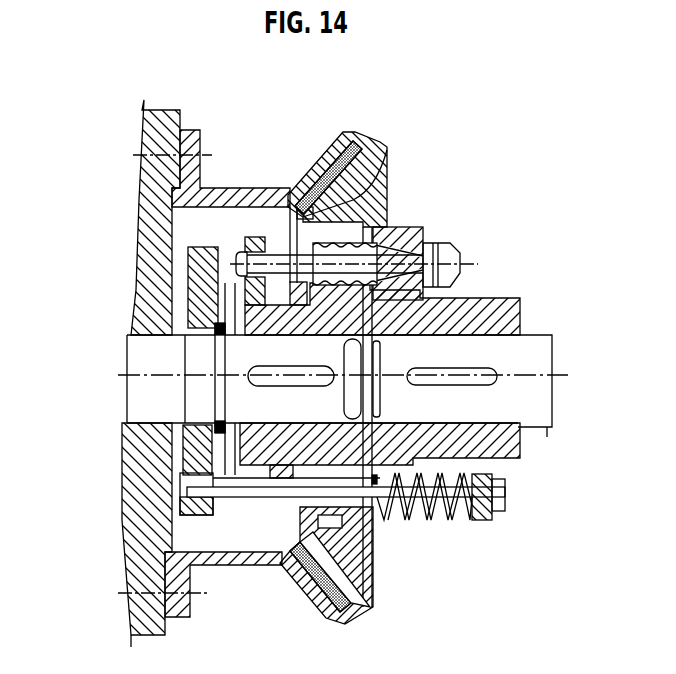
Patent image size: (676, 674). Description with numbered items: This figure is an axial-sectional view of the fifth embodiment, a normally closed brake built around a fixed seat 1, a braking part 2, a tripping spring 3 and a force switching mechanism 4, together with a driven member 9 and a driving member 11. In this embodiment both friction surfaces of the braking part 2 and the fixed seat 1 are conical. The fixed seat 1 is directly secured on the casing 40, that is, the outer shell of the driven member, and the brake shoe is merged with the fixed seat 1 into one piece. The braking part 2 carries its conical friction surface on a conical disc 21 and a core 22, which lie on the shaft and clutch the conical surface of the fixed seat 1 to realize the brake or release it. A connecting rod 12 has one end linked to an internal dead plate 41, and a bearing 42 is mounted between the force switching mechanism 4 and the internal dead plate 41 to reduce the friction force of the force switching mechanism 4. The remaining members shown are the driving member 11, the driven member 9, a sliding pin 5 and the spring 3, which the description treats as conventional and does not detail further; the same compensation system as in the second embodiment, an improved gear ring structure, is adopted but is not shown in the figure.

The fixed seat 1 is at (252, 190).
The braking part 2 is at (352, 587).
The tripping spring 3 is at (432, 507).
The force switching mechanism 4 is at (247, 240).
The sliding pin 5 is at (380, 268).
The driven member 9 is at (148, 355).
The driving member 11 is at (507, 360).
The connecting rod 12 is at (418, 497).
The conical disc 21 is at (387, 177).
The core 22 is at (462, 302).
The casing of the driven member 40 is at (147, 188).
The internal dead plate 41 is at (140, 463).
The bearing 42 is at (217, 287).